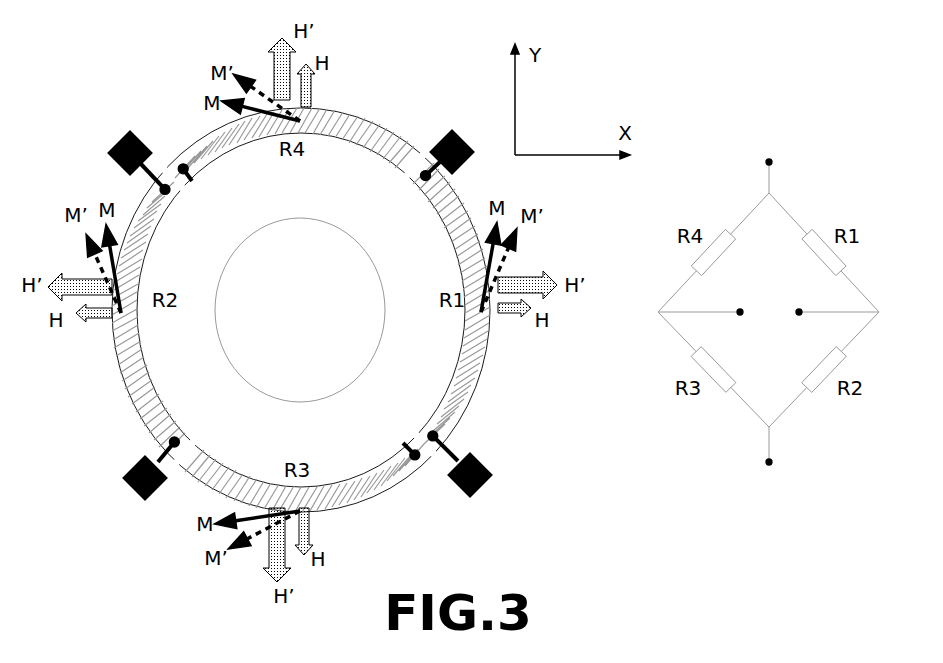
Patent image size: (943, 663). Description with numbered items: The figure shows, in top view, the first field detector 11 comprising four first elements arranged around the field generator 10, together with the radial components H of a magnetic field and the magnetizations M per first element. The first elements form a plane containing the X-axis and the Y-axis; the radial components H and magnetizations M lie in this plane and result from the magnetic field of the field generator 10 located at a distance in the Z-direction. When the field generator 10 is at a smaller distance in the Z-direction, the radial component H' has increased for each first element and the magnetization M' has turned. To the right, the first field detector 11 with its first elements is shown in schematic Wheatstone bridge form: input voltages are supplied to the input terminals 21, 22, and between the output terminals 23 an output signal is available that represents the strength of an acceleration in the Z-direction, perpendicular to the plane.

The field generator 10 is at (300, 310).
The first field detector 11 is at (402, 204).
The input terminal 21 is at (789, 173).
The input terminal 22 is at (789, 447).
The output terminals 23 is at (768, 312).